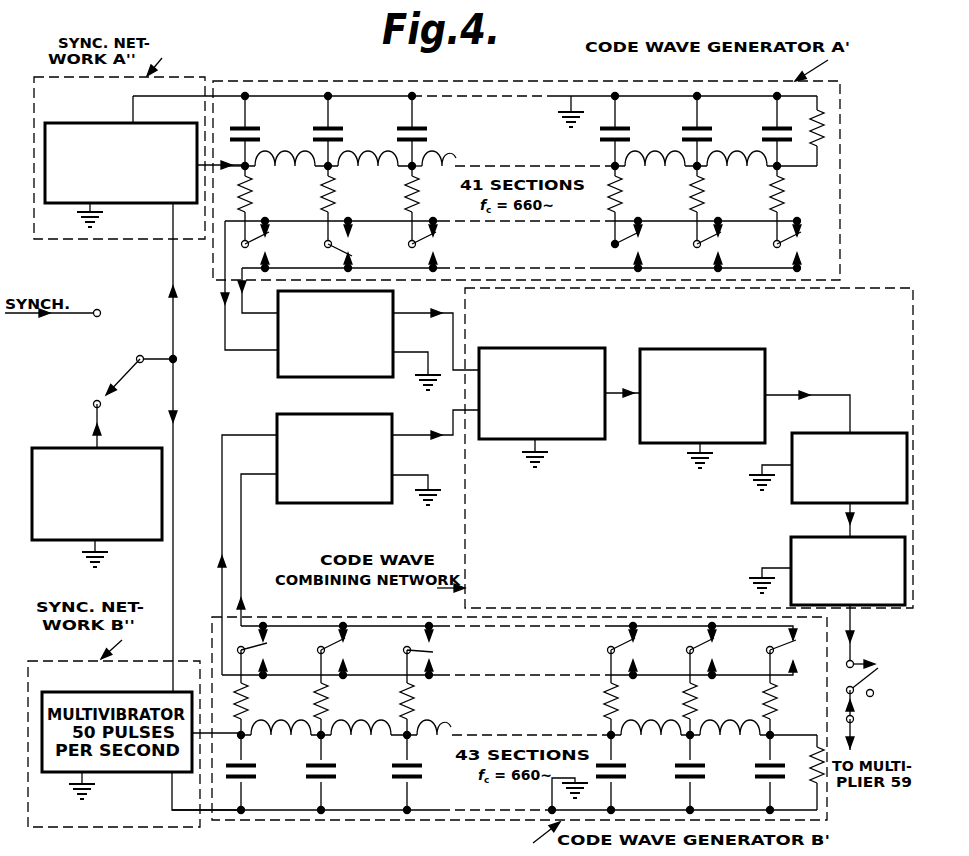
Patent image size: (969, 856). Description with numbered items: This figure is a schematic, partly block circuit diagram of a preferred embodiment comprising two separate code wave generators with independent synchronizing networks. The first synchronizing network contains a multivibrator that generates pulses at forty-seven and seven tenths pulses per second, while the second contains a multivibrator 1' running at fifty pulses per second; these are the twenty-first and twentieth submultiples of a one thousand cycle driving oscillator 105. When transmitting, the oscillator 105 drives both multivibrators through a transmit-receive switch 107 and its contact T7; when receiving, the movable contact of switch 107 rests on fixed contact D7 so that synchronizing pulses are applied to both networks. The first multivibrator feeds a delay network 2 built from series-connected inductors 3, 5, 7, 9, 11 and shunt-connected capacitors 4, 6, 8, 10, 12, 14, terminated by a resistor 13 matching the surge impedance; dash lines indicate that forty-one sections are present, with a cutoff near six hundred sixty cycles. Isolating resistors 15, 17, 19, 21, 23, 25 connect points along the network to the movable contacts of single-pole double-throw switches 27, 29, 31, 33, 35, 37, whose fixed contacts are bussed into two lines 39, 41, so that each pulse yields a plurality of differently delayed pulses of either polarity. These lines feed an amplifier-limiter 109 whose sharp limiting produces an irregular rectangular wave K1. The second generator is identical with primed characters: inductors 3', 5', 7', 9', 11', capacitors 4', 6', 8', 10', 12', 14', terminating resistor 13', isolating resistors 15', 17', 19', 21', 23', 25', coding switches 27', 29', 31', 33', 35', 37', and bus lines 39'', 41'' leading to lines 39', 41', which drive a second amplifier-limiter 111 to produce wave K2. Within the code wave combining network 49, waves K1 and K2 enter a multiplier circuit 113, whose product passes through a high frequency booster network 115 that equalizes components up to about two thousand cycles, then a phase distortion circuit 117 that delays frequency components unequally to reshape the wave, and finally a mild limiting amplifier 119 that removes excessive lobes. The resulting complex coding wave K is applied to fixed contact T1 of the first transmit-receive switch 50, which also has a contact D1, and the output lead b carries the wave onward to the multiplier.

The multivibrator 1' is at (121, 180).
The delay network 2 is at (529, 147).
The series-connected inductor 3 is at (286, 179).
The shunt-connected capacitor 4 is at (250, 131).
The series-connected inductor 5 is at (370, 179).
The shunt-connected capacitor 6 is at (333, 131).
The series-connected inductor 7 is at (437, 185).
The shunt-connected capacitor 8 is at (417, 131).
The series-connected inductor 9 is at (656, 179).
The shunt-connected capacitor 10 is at (626, 131).
The series-connected inductor 11 is at (737, 183).
The shunt-connected capacitor 12 is at (708, 131).
The terminating resistor 13 is at (823, 149).
The shunt-connected capacitor 14 is at (788, 131).
The isolating resistor 15 is at (260, 193).
The isolating resistor 17 is at (343, 193).
The isolating resistor 19 is at (396, 193).
The isolating resistor 21 is at (630, 193).
The isolating resistor 23 is at (710, 193).
The isolating resistor 25 is at (799, 195).
The single-pole double-throw switch 27 is at (272, 241).
The single-pole double-throw switch 29 is at (355, 241).
The single-pole double-throw switch 31 is at (439, 241).
The single-pole double-throw switch 33 is at (645, 240).
The single-pole double-throw switch 35 is at (726, 238).
The single-pole double-throw switch 37 is at (805, 242).
The line 39 is at (256, 308).
The line 41 is at (233, 285).
The code wave combining network 49 is at (542, 559).
The transmit-receive switch 50 is at (862, 710).
The 1000 cycle driving oscillator 105 is at (150, 440).
The transmit-receive switch 107 is at (123, 372).
The amplifier-limiter 109 is at (300, 378).
The amplifier-limiter 111 is at (338, 503).
The multiplier circuit 113 is at (522, 348).
The high frequency booster network 115 is at (733, 338).
The phase distortion circuit 117 is at (887, 424).
The mild limiting amplifier 119 is at (791, 538).
The fixed contact D7 is at (66, 299).
The fixed contact T7 is at (92, 407).
The irregular rectangular wave K1 is at (430, 312).
The irregular rectangular wave K2 is at (412, 436).
The complex coding wave K is at (853, 634).
The fixed contact T1 is at (877, 671).
The fixed contact D1 is at (874, 693).
The output lead b is at (850, 810).
The series-connected inductor 3' is at (281, 743).
The shunt-connected capacitor 4' is at (252, 772).
The series-connected inductor 5' is at (361, 743).
The shunt-connected capacitor 6' is at (333, 772).
The series-connected inductor 7' is at (436, 743).
The shunt-connected capacitor 8' is at (419, 772).
The series-connected inductor 9' is at (651, 745).
The shunt-connected capacitor 10' is at (624, 772).
The series-connected inductor 11' is at (730, 747).
The shunt-connected capacitor 12' is at (702, 772).
The terminating resistor 13' is at (813, 760).
The shunt-connected capacitor 14' is at (781, 772).
The isolating resistor 15' is at (260, 705).
The isolating resistor 17' is at (341, 705).
The isolating resistor 19' is at (428, 705).
The isolating resistor 21' is at (589, 705).
The isolating resistor 23' is at (669, 705).
The isolating resistor 25' is at (747, 705).
The coding switch 27' is at (272, 658).
The coding switch 29' is at (353, 656).
The coding switch 31' is at (439, 660).
The coding switch 33' is at (643, 656).
The coding switch 35' is at (721, 656).
The coding switch 37' is at (798, 657).
The line 39' is at (250, 536).
The line 41' is at (226, 555).
The switch bus line 39'' is at (519, 645).
The switch bus line 41'' is at (509, 684).